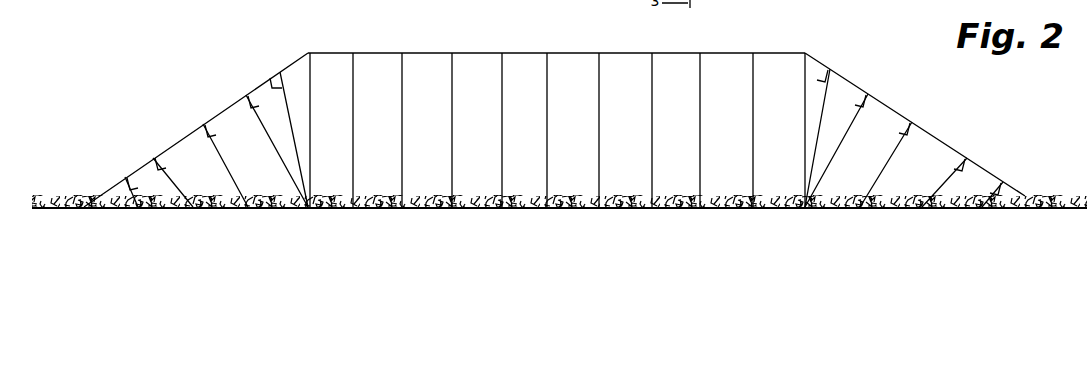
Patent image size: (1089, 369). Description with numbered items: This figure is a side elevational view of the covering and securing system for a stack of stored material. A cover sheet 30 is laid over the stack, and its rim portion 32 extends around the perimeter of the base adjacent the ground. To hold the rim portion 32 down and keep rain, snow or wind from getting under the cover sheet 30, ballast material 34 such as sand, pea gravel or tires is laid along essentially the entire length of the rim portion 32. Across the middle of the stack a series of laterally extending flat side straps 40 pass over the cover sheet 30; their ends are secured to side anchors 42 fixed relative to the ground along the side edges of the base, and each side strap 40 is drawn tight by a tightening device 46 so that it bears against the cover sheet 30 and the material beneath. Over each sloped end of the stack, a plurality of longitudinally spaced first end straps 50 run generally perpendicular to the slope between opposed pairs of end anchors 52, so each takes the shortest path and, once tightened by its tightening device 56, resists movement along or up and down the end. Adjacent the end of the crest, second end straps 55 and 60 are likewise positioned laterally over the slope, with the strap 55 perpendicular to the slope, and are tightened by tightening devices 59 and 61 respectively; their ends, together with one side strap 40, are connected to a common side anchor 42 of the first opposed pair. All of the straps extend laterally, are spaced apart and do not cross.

The cover sheet 30 is at (574, 178).
The rim portion 32 is at (88, 210).
The ballast material 34 is at (77, 197).
The flat side straps 40 is at (312, 121).
The side anchors 42 is at (312, 212).
The tightening devices 46 is at (351, 173).
The first end straps 50 is at (128, 176).
The end anchors 52 is at (139, 212).
The second end strap 55 is at (246, 104).
The tightening device 56 is at (185, 191).
The tightening device 59 is at (298, 178).
The second end strap 60 is at (271, 80).
The tightening device 61 is at (303, 172).